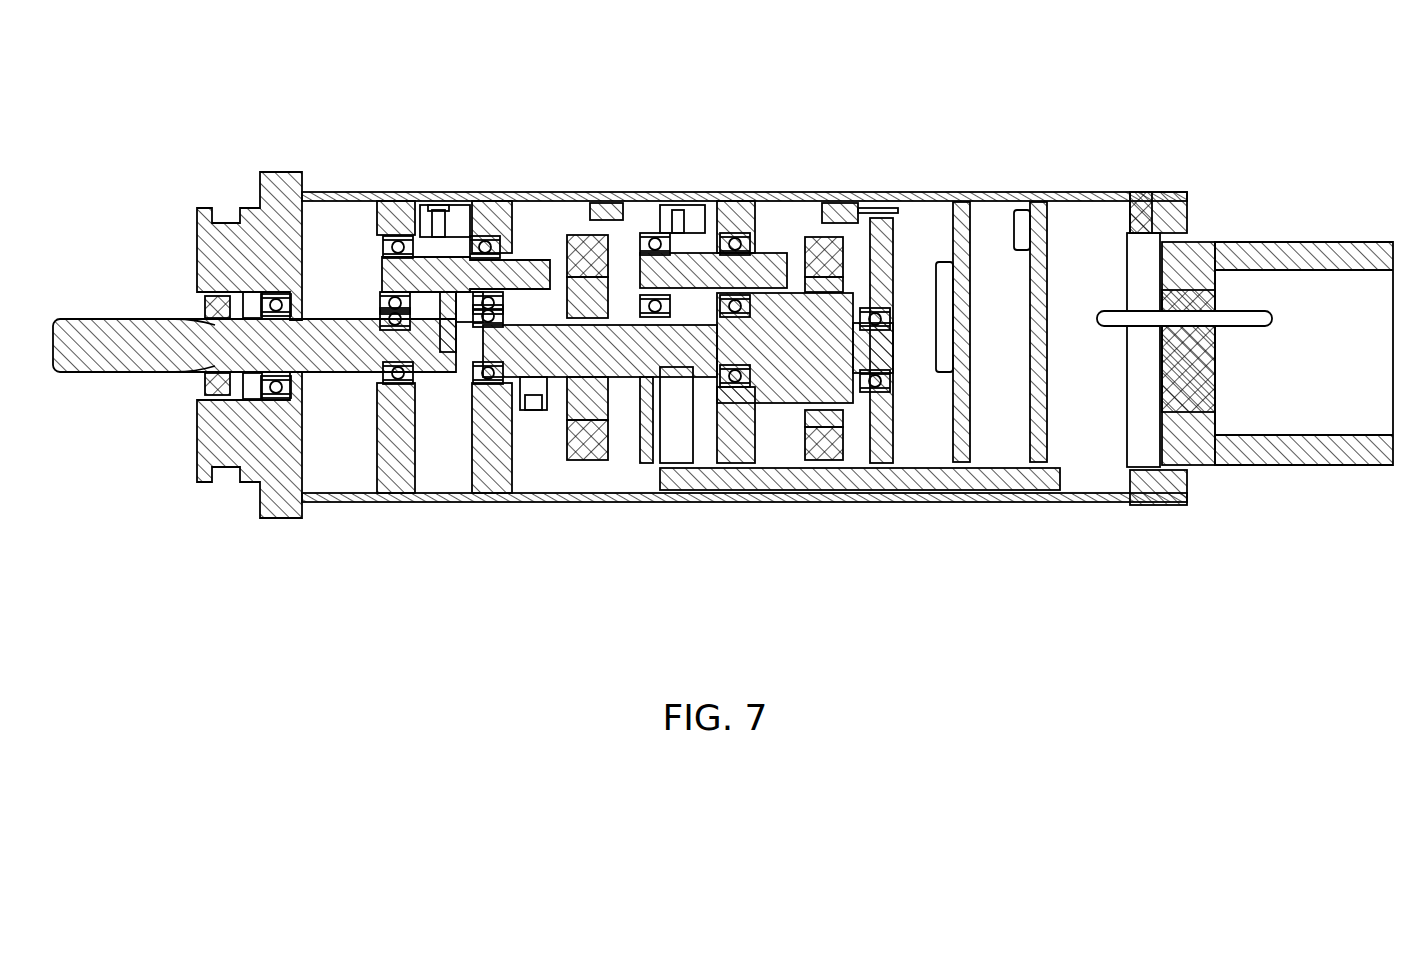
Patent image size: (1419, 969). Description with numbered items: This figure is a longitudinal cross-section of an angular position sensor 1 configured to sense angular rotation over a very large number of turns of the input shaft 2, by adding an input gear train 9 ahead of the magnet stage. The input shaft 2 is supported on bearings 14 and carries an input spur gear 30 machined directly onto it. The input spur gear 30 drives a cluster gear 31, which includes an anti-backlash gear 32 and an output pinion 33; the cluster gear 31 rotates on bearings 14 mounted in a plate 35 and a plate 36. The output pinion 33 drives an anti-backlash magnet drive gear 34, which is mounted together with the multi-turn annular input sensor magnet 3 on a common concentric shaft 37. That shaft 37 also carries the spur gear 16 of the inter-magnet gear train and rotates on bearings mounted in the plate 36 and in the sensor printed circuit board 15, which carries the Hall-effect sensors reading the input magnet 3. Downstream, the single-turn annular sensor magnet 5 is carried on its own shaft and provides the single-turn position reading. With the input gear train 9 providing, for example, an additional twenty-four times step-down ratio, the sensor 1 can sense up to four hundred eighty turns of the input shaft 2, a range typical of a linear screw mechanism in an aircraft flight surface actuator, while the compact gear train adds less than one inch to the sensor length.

The sensor 1 is at (234, 647).
The input shaft 2 is at (129, 355).
The multi-turn annular input sensor magnet 3 is at (600, 192).
The single-turn annular sensor magnet 5 is at (833, 235).
The input gear train 9 is at (497, 185).
The bearings 14 is at (383, 388).
The sensor printed circuit board 15 is at (668, 200).
The input pinion 16 is at (683, 350).
The input spur gear 30 is at (455, 287).
The cluster gear 31 is at (385, 192).
The anti-backlash gear 32 is at (450, 192).
The output pinion 33 is at (542, 192).
The anti-backlash magnet drive gear 34 is at (525, 400).
The plate 35 is at (385, 465).
The plate 36 is at (487, 470).
The common concentric shaft 37 is at (580, 460).